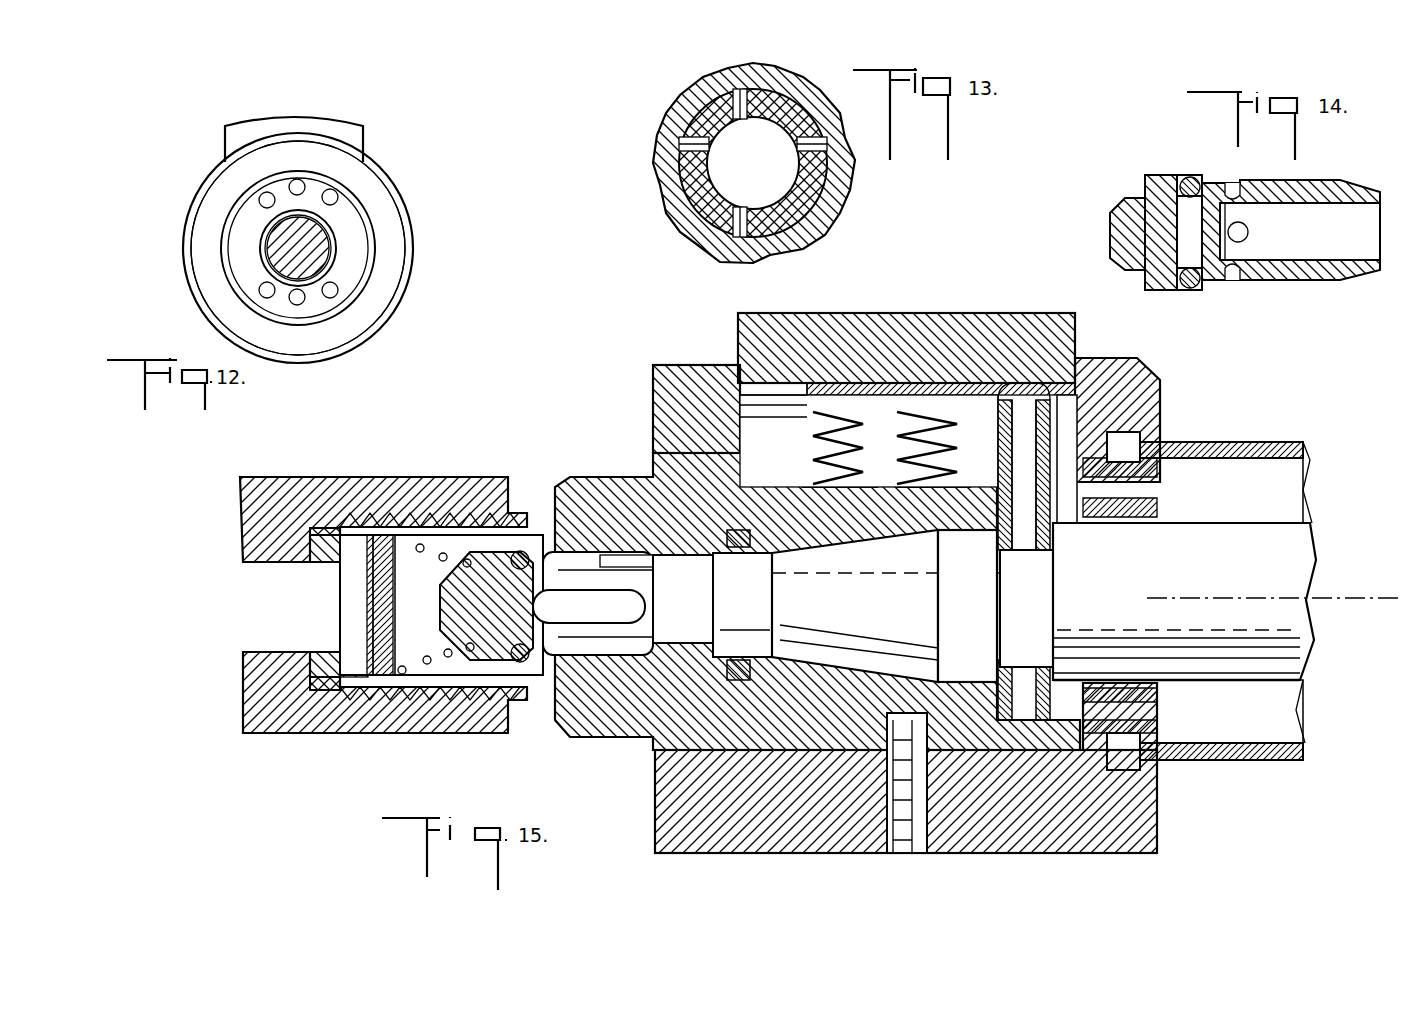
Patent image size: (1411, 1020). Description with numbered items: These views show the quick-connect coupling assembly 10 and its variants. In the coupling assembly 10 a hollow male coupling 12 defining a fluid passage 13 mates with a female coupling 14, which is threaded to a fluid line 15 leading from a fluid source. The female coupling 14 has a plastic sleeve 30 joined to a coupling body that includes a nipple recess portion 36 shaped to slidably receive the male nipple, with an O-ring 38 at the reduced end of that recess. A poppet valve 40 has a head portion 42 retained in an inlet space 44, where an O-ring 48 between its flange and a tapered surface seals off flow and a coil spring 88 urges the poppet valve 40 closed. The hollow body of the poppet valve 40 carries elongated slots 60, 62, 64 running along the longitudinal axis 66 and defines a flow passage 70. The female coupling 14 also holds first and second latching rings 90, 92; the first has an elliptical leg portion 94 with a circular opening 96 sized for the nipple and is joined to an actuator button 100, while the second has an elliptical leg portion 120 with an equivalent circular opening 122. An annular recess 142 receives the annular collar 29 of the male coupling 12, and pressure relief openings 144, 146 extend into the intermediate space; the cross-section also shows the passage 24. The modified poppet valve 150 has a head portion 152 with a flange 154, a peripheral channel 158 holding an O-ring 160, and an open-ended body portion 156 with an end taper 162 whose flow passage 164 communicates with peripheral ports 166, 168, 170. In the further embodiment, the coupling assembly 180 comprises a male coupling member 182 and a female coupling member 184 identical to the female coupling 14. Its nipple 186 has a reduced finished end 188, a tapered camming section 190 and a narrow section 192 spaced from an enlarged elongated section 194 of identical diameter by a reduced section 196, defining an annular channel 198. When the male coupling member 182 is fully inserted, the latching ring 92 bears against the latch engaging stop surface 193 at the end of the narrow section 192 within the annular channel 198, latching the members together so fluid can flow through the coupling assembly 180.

In FIG. 12, the coupling assembly 10 is at (398, 128).
In FIG. 12, the male coupling 12 is at (356, 253).
In FIG. 15, the fluid passage 13 is at (1257, 570).
In FIG. 12, the female coupling 14 is at (416, 184).
In FIG. 13, the female coupling 14 is at (847, 233).
In FIG. 15, the line 15 is at (353, 477).
In FIG. 12, the passage 24 is at (272, 243).
In FIG. 15, the annular collar 29 is at (1195, 760).
In FIG. 12, the sleeve 30 is at (407, 298).
In FIG. 15, the sleeve 30 is at (750, 855).
In FIG. 15, the nipple recess portion 36 is at (867, 677).
In FIG. 15, the O-ring 38 is at (725, 680).
In FIG. 13, the poppet valve 40 is at (827, 134).
In FIG. 15, the poppet valve 40 is at (618, 660).
In FIG. 15, the head portion 42 is at (488, 662).
In FIG. 15, the inlet space 44 is at (430, 617).
In FIG. 15, the O-ring 48 is at (523, 662).
In FIG. 13, the elongated slot 60 is at (723, 103).
In FIG. 15, the elongated slot 60 is at (603, 572).
In FIG. 15, the elongated slot 62 is at (605, 622).
In FIG. 13, the elongated slot 64 is at (763, 227).
In FIG. 15, the elongated slot 64 is at (595, 650).
In FIG. 13, the longitudinal axis 66 is at (817, 167).
In FIG. 15, the longitudinal axis 66 is at (1345, 598).
In FIG. 13, the flow passage 70 is at (766, 183).
In FIG. 15, the flow passage 70 is at (686, 615).
In FIG. 15, the coil spring 88 is at (430, 663).
In FIG. 15, the first latching ring 90 is at (1064, 425).
In FIG. 15, the second latching ring 92 is at (994, 417).
In FIG. 15, the elliptical leg portion 94 is at (1069, 462).
In FIG. 15, the circular opening 96 is at (997, 543).
In FIG. 12, the actuator button 100 is at (334, 112).
In FIG. 15, the actuator button 100 is at (944, 313).
In FIG. 15, the elliptical leg portion 120 is at (1023, 400).
In FIG. 15, the circular opening 122 is at (1010, 500).
In FIG. 12, the annular recess 142 is at (370, 272).
In FIG. 12, the pressure relief opening 144 is at (433, 201).
In FIG. 15, the pressure relief opening 144 is at (1150, 488).
In FIG. 12, the pressure relief opening 146 is at (267, 292).
In FIG. 15, the pressure relief opening 146 is at (1150, 708).
In FIG. 14, the poppet valve 150 is at (1128, 170).
In FIG. 14, the head portion 152 is at (1127, 197).
In FIG. 14, the flange 154 is at (1167, 177).
In FIG. 14, the body portion 156 is at (1310, 183).
In FIG. 14, the peripheral channel 158 is at (1183, 290).
In FIG. 14, the O-ring 160 is at (1192, 180).
In FIG. 14, the end taper 162 is at (1368, 185).
In FIG. 14, the flow passage 164 is at (1360, 238).
In FIG. 14, the peripheral port 166 is at (1237, 183).
In FIG. 14, the peripheral port 168 is at (1247, 227).
In FIG. 14, the peripheral port 170 is at (1237, 281).
In FIG. 15, the coupling assembly 180 is at (607, 372).
In FIG. 15, the male coupling member 182 is at (1290, 413).
In FIG. 15, the female coupling member 184 is at (618, 462).
In FIG. 15, the nipple 186 is at (813, 663).
In FIG. 15, the reduced finished end 188 is at (762, 617).
In FIG. 15, the tapered camming section 190 is at (883, 618).
In FIG. 15, the narrow section 192 is at (983, 618).
In FIG. 15, the latch engaging stop surface 193 is at (1053, 584).
In FIG. 15, the enlarged elongated section 194 is at (1138, 611).
In FIG. 15, the reduced section 196 is at (1040, 623).
In FIG. 15, the annular channel 198 is at (1053, 560).